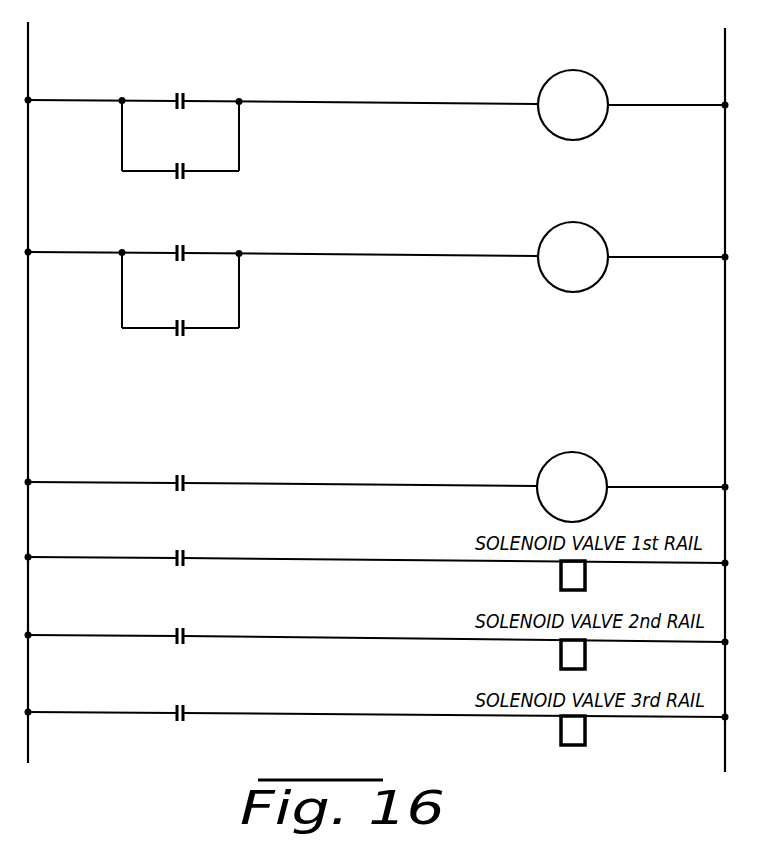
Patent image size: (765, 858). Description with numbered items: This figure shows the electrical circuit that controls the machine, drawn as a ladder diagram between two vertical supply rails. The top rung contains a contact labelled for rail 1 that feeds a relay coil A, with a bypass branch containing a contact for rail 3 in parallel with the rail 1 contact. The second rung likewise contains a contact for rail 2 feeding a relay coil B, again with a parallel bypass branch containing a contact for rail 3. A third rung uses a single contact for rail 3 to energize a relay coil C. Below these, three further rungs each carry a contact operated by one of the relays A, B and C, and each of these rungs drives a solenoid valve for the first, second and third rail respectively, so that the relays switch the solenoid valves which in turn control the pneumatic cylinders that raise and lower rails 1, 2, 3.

The rail 1 is at (283, 91).
The rail 2 is at (283, 243).
The rail 3 is at (282, 296).
The relay A coil and contact A is at (376, 318).
The relay B coil and contact B is at (376, 433).
The relay C coil and contact C is at (376, 586).